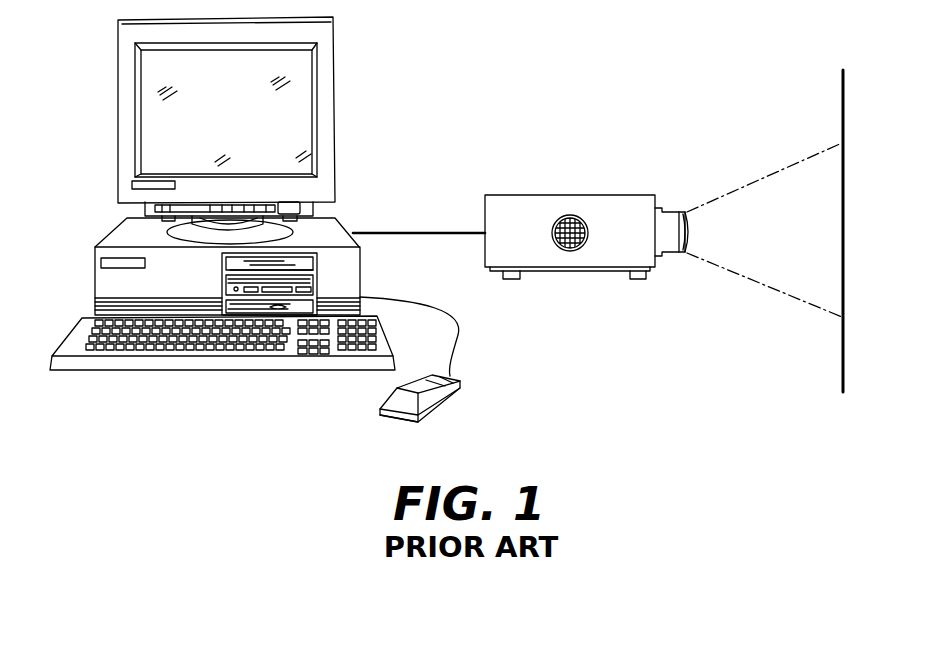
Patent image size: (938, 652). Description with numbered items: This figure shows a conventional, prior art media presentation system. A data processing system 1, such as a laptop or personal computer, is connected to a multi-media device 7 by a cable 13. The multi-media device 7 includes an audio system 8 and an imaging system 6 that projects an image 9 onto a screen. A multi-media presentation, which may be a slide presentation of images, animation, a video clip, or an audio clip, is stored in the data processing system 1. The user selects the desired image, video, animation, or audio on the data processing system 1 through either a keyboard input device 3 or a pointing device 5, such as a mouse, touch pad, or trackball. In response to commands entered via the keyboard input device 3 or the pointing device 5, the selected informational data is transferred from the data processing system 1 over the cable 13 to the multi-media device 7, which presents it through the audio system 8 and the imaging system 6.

The data processing system 1 is at (80, 22).
The keyboard input device 3 is at (227, 362).
The pointing device 5 is at (397, 417).
The imaging system 6 is at (688, 233).
The multi-media device 7 is at (620, 225).
The audio system 8 is at (572, 248).
The image 9 is at (842, 112).
The cable 13 is at (422, 230).